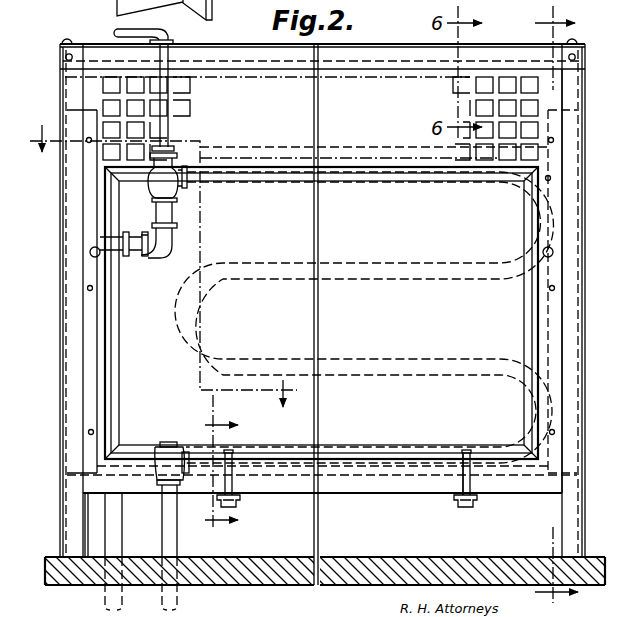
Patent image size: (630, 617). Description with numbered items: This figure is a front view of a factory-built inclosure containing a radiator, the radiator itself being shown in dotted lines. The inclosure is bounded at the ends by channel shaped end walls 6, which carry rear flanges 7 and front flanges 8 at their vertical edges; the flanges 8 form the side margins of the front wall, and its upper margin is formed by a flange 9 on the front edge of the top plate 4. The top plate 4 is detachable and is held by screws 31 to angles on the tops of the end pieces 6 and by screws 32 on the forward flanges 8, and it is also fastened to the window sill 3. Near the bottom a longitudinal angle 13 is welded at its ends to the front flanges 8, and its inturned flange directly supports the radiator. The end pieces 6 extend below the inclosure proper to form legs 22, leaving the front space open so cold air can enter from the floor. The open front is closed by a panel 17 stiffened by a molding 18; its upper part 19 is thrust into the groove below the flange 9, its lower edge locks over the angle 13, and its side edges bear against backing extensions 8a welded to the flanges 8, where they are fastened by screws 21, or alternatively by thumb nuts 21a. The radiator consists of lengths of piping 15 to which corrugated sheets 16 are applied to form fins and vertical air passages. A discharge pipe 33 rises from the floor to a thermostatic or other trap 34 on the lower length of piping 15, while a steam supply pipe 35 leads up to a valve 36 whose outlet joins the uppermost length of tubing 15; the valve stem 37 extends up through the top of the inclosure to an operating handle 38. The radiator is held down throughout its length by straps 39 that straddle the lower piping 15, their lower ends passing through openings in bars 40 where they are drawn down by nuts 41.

The window sill 3 is at (564, 305).
The top plate 4 is at (407, 31).
The end walls 6 is at (62, 339).
The flanges 7 is at (164, 256).
The flanges 8 is at (572, 104).
The extensions 8a is at (550, 170).
The flange 9 is at (248, 68).
The angle 13 is at (372, 489).
The piping 15 is at (262, 190).
The corrugated sheets 16 is at (277, 128).
The panel 17 is at (374, 183).
The molding 18 is at (527, 310).
The upper part of panel 19 is at (538, 103).
The screws 21 is at (90, 138).
The thumb nuts 21a is at (89, 256).
The legs 22 is at (62, 514).
The screws 31 is at (575, 42).
The screws 32 is at (576, 58).
The discharge pipe 33 is at (170, 543).
The trap 34 is at (176, 442).
The steam supply pipe 35 is at (114, 518).
The valve 36 is at (150, 188).
The stem 37 is at (168, 117).
The operating handle 38 is at (118, 31).
The straps 39 is at (240, 450).
The bars 40 is at (242, 498).
The nuts 41 is at (462, 504).